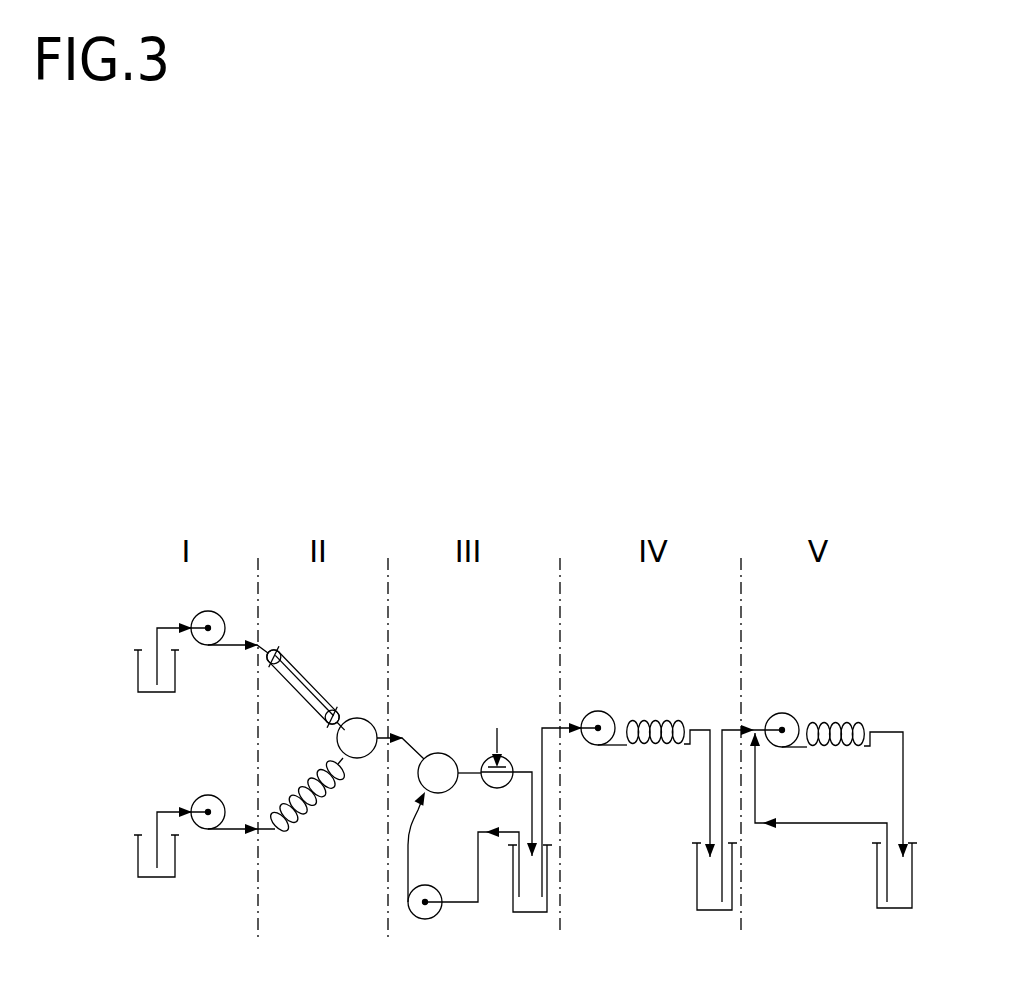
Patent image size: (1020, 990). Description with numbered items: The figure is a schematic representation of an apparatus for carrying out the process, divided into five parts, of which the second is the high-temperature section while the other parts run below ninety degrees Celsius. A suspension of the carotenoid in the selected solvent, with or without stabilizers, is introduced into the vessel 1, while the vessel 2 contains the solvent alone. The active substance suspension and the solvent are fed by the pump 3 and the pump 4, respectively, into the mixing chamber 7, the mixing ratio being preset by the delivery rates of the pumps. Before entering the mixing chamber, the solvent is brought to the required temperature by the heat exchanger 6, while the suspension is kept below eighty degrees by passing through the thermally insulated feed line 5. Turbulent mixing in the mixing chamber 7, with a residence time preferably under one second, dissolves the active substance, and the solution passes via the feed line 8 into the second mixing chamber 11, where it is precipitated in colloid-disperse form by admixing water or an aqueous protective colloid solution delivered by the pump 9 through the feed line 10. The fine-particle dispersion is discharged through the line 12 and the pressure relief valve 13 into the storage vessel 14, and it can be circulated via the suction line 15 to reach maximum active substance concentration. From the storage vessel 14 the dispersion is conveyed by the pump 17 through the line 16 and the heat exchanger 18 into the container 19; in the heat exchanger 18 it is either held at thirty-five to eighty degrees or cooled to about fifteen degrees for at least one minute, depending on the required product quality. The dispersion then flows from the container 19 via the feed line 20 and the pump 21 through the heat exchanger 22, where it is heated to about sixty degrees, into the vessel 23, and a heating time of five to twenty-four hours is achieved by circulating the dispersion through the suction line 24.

The vessel 1 is at (170, 686).
The vessel 2 is at (170, 868).
The pump 3 is at (220, 617).
The pump 4 is at (220, 800).
The thermally insulated feed line 5 is at (302, 682).
The heat exchanger 6 is at (287, 823).
The mixing chamber 7 is at (350, 748).
The feed line 8 is at (413, 750).
The pump 9 is at (422, 911).
The feed line 10 is at (408, 860).
The second mixing chamber 11 is at (428, 784).
The line 12 is at (470, 773).
The pressure relief valve 13 is at (508, 760).
The storage vessel 14 is at (530, 903).
The suction line 15 is at (468, 898).
The line 16 is at (562, 735).
The pump 17 is at (602, 724).
The heat exchanger 18 is at (657, 747).
The container 19 is at (703, 883).
The feed line 20 is at (730, 730).
The pump 21 is at (782, 723).
The heat exchanger 22 is at (837, 747).
The vessel 23 is at (897, 900).
The suction line 24 is at (793, 827).